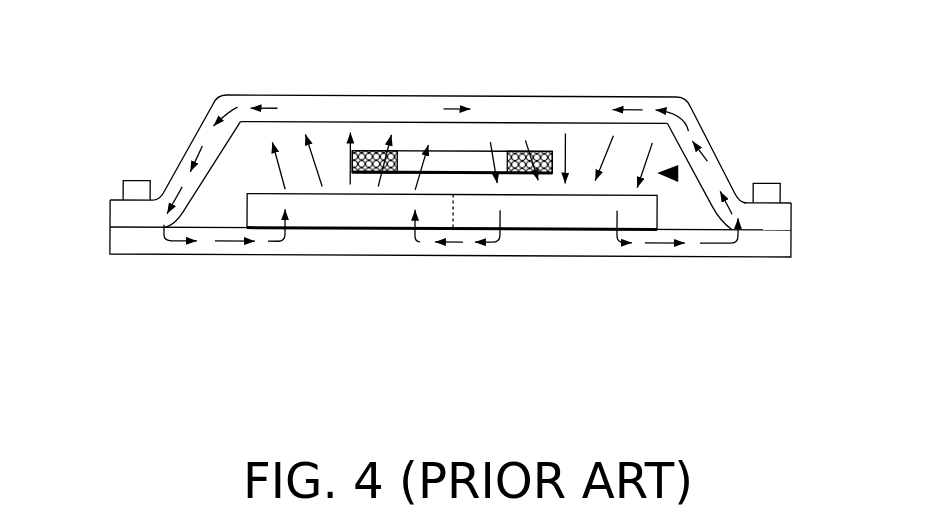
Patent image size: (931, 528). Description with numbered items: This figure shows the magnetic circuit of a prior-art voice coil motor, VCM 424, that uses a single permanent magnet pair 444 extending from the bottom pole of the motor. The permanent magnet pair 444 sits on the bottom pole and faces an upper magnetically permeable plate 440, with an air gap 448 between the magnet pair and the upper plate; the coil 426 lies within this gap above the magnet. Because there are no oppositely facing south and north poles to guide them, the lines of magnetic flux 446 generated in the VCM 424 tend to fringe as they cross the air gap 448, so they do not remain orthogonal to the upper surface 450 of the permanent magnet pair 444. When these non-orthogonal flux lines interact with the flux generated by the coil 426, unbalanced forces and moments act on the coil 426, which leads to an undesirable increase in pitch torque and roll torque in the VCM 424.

The VCM 424 is at (704, 314).
The coil 426 is at (407, 150).
The upper magnetically permeable plate 440 is at (572, 108).
The permanent magnet pair 444 is at (383, 212).
The lines of magnetic flux 446 is at (200, 157).
The air gap 448 is at (677, 173).
The upper surface 450 is at (515, 187).